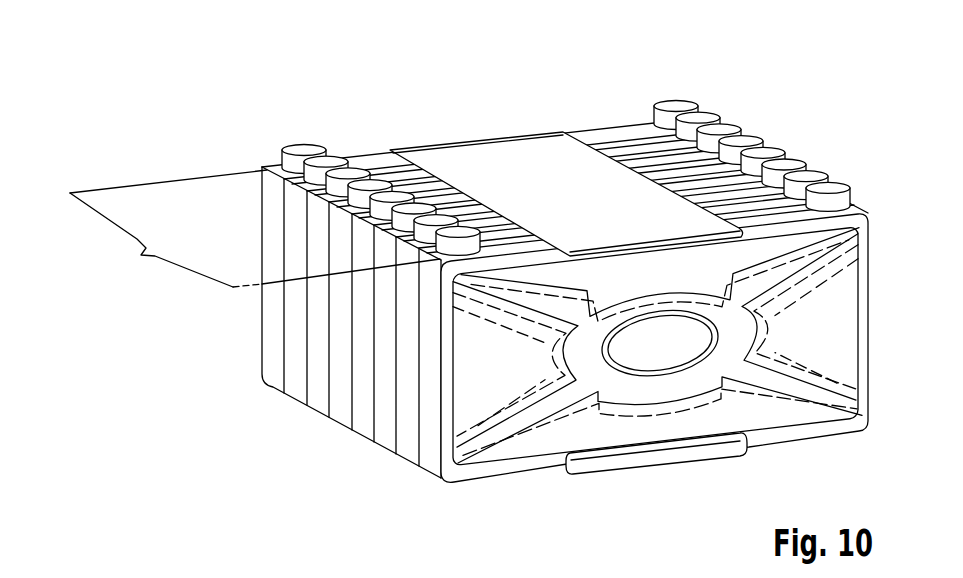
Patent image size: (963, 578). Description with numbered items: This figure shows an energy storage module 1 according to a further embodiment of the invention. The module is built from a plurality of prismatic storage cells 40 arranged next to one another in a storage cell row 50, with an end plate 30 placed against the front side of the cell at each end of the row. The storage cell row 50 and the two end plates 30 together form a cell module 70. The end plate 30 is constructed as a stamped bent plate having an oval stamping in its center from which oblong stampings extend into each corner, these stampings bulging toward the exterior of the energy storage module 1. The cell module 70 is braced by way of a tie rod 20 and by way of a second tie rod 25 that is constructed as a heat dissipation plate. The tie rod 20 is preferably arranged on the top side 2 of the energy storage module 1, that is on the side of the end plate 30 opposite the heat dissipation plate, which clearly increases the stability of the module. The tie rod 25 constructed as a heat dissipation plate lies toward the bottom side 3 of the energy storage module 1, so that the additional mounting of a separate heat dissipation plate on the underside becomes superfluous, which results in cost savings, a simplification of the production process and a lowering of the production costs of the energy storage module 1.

The energy storage module 1 is at (403, 72).
The top side of energy storage module 2 is at (601, 150).
The bottom side of energy storage module 3 is at (500, 494).
The tie rod 20 is at (497, 148).
The tie rod 25 is at (677, 453).
The end plate 30 is at (606, 436).
The storage cells 40 is at (616, 140).
The storage cell row 50 is at (362, 143).
The cell module 70 is at (255, 228).